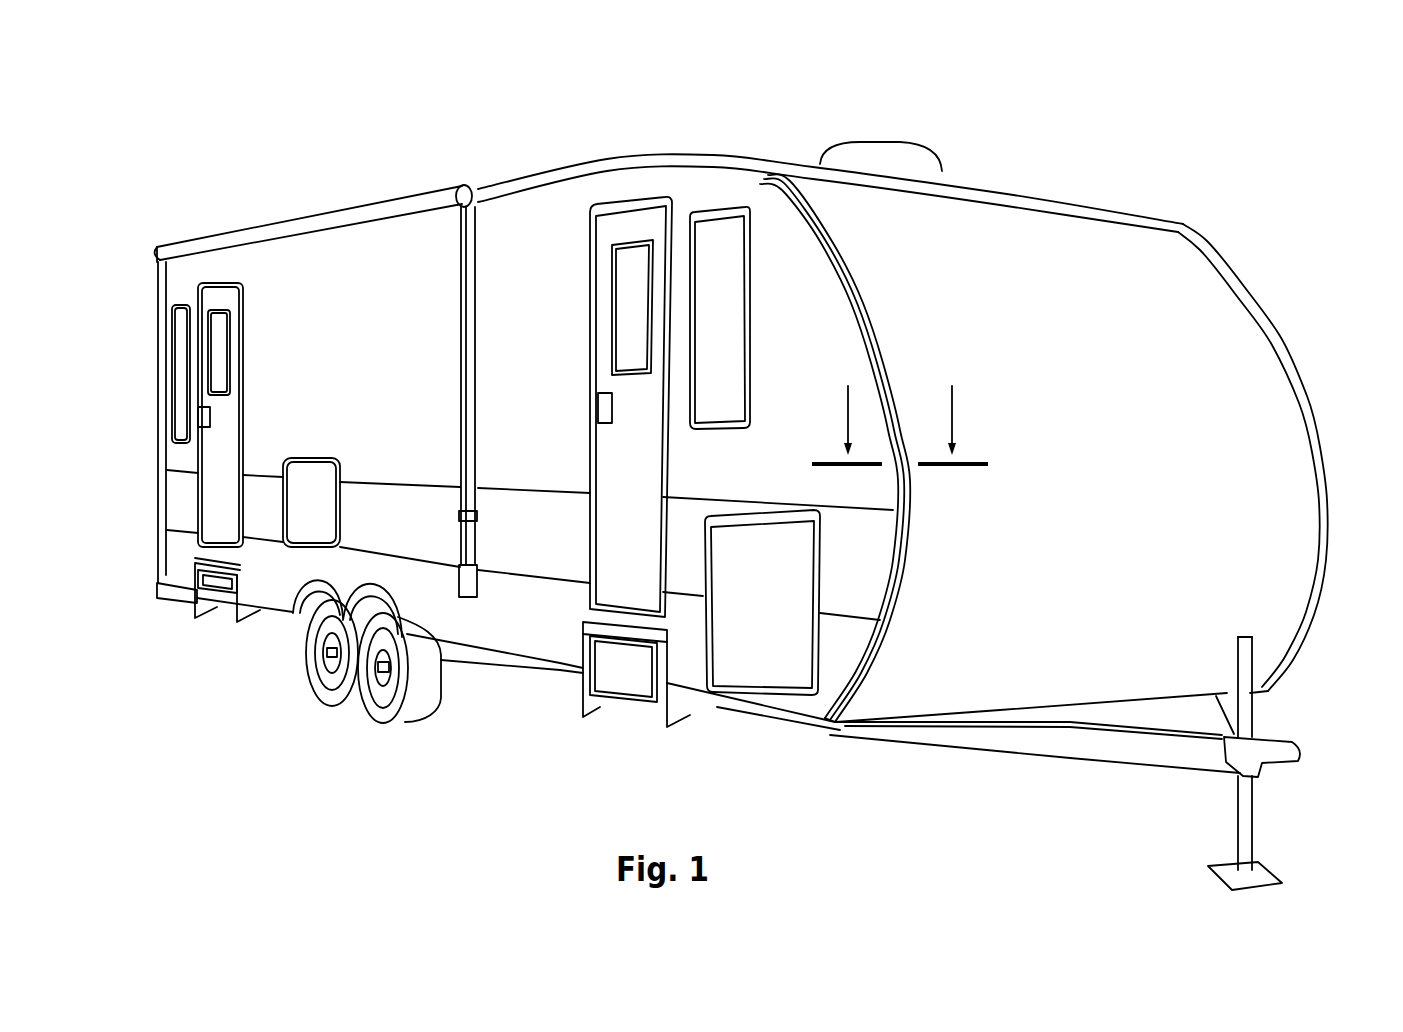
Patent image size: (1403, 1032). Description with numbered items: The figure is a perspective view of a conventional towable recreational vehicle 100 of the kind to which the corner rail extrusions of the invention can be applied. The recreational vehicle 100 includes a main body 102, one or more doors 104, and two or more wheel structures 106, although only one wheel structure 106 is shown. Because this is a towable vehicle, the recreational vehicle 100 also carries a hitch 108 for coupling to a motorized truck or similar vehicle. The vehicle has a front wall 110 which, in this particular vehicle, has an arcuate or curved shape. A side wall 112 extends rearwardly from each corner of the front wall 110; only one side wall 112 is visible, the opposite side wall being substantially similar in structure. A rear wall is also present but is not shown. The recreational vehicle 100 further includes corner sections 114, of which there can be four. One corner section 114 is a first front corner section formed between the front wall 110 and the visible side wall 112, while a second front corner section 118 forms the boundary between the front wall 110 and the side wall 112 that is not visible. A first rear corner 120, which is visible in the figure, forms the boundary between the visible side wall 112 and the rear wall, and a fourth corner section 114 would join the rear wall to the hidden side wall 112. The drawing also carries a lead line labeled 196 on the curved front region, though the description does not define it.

The recreational vehicle 100 is at (1178, 136).
The main body 102 is at (519, 686).
The door 104 is at (637, 220).
The wheel structure 106 is at (340, 728).
The hitch 108 is at (1042, 775).
The front wall 110 is at (1222, 318).
The side wall 112 is at (518, 210).
The corner section 114 is at (868, 304).
The second front corner section 118 is at (1285, 340).
The first rear corner 120 is at (163, 325).
The curved front panel edge 196 is at (838, 246).